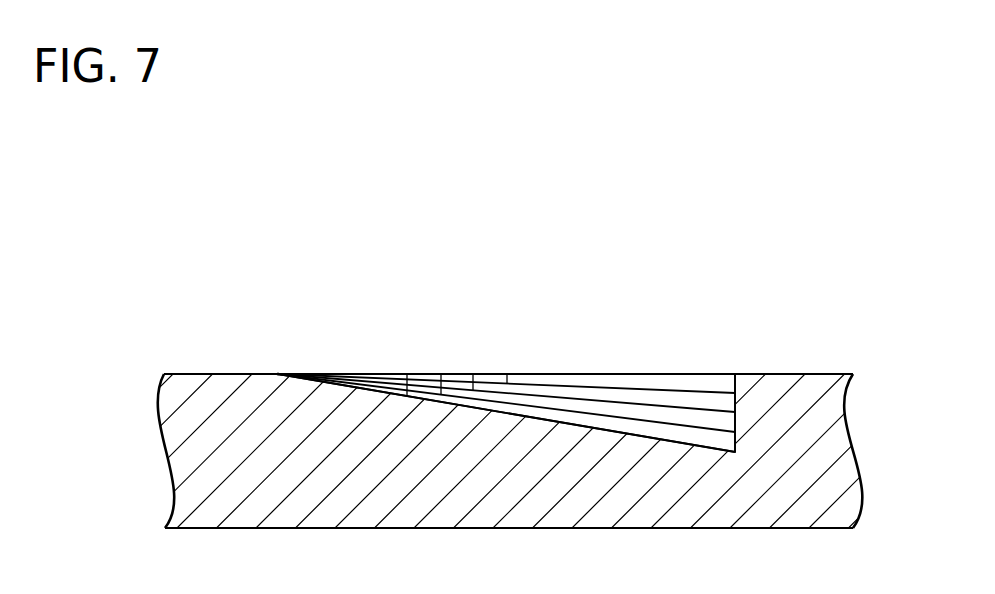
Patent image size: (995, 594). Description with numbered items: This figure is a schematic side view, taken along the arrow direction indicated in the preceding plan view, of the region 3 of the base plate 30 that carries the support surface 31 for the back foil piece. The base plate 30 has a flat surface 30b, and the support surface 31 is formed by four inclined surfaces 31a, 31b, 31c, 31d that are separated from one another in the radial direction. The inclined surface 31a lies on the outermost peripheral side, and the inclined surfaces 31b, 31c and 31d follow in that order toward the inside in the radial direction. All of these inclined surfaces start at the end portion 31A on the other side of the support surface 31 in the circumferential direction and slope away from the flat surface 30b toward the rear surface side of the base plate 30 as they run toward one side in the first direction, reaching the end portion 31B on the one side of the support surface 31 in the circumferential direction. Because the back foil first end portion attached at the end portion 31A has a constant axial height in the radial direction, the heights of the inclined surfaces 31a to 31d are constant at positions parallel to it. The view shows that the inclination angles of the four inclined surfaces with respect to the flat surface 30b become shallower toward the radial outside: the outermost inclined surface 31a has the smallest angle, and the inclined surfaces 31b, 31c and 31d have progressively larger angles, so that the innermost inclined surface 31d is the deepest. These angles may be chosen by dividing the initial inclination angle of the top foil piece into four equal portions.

The cutting tool / structure 3 is at (221, 242).
The base plate 30 is at (197, 438).
The flat surface 30b is at (179, 374).
The support surface 31 is at (753, 277).
The inclined surface 31a is at (690, 387).
The inclined surface 31b is at (628, 407).
The inclined surface 31c is at (570, 410).
The inclined surface 31d is at (537, 418).
The end portion on the other side of the support surface in the circumferential dire 31A is at (276, 374).
The end portion on one side of the support surface in the circumferential direction 31B is at (736, 374).